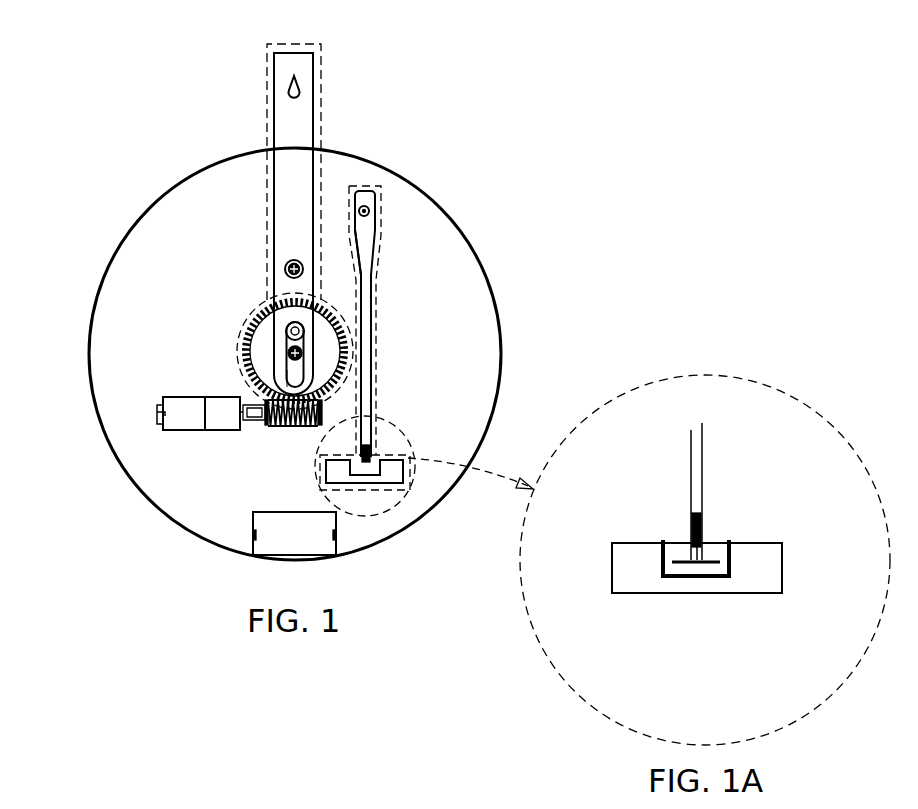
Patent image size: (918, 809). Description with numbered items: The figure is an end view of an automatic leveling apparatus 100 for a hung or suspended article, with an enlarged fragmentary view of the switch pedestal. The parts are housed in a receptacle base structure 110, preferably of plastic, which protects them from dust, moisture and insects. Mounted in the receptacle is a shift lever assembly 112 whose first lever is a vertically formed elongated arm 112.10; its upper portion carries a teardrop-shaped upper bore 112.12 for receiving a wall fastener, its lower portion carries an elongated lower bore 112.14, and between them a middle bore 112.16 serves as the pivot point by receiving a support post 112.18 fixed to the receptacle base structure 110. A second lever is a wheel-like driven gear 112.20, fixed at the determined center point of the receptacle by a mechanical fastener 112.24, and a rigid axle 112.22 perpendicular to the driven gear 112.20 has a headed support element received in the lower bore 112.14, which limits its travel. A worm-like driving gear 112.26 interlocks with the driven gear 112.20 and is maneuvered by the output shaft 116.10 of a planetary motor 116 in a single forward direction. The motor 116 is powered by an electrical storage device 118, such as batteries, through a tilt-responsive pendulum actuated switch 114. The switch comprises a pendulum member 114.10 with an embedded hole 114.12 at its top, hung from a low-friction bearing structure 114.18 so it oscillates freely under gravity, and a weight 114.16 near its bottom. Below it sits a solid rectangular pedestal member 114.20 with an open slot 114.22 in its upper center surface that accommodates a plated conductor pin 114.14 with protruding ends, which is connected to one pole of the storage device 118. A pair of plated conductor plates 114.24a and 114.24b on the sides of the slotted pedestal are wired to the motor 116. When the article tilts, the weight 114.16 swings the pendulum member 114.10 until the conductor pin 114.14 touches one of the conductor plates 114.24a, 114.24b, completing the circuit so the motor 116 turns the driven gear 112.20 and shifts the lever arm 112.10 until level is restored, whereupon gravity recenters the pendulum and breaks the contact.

In FIG. 1, the automatic leveling apparatus 100 is at (82, 118).
In FIG. 1, the receptacle base structure 110 is at (152, 199).
In FIG. 1, the shift lever assembly 112 is at (323, 45).
In FIG. 1, the elongated arm 112.10 is at (275, 76).
In FIG. 1, the upper bore 112.12 is at (300, 90).
In FIG. 1, the elongated lower bore 112.14 is at (286, 386).
In FIG. 1, the middle bore 112.16 is at (285, 269).
In FIG. 1, the support post 112.18 is at (292, 262).
In FIG. 1, the wheel-like driven gear 112.20 is at (245, 320).
In FIG. 1, the rigid axle 112.22 is at (306, 333).
In FIG. 1, the mechanical fastener 112.24 is at (288, 353).
In FIG. 1, the worm-like driving gear 112.26 is at (320, 410).
In FIG. 1, the pendulum actuated switch 114 is at (377, 197).
In FIG. 1, the pendulum member 114.10 is at (372, 300).
In FIG. 1, the embedded hole 114.12 is at (370, 214).
In FIG. 1A, the conductor pin 114.14 is at (700, 567).
In FIG. 1A, the weight 114.16 is at (692, 527).
In FIG. 1, the bearing structure 114.18 is at (366, 206).
In FIG. 1A, the pedestal member 114.20 is at (762, 594).
In FIG. 1A, the open slot 114.22 is at (715, 548).
In FIG. 1A, the conductor plate 114.24a is at (662, 555).
In FIG. 1A, the conductor plate 114.24b is at (730, 560).
In FIG. 1, the planetary motor 116 is at (170, 428).
In FIG. 1, the output shaft 116.10 is at (262, 425).
In FIG. 1, the electrical storage device 118 is at (255, 540).